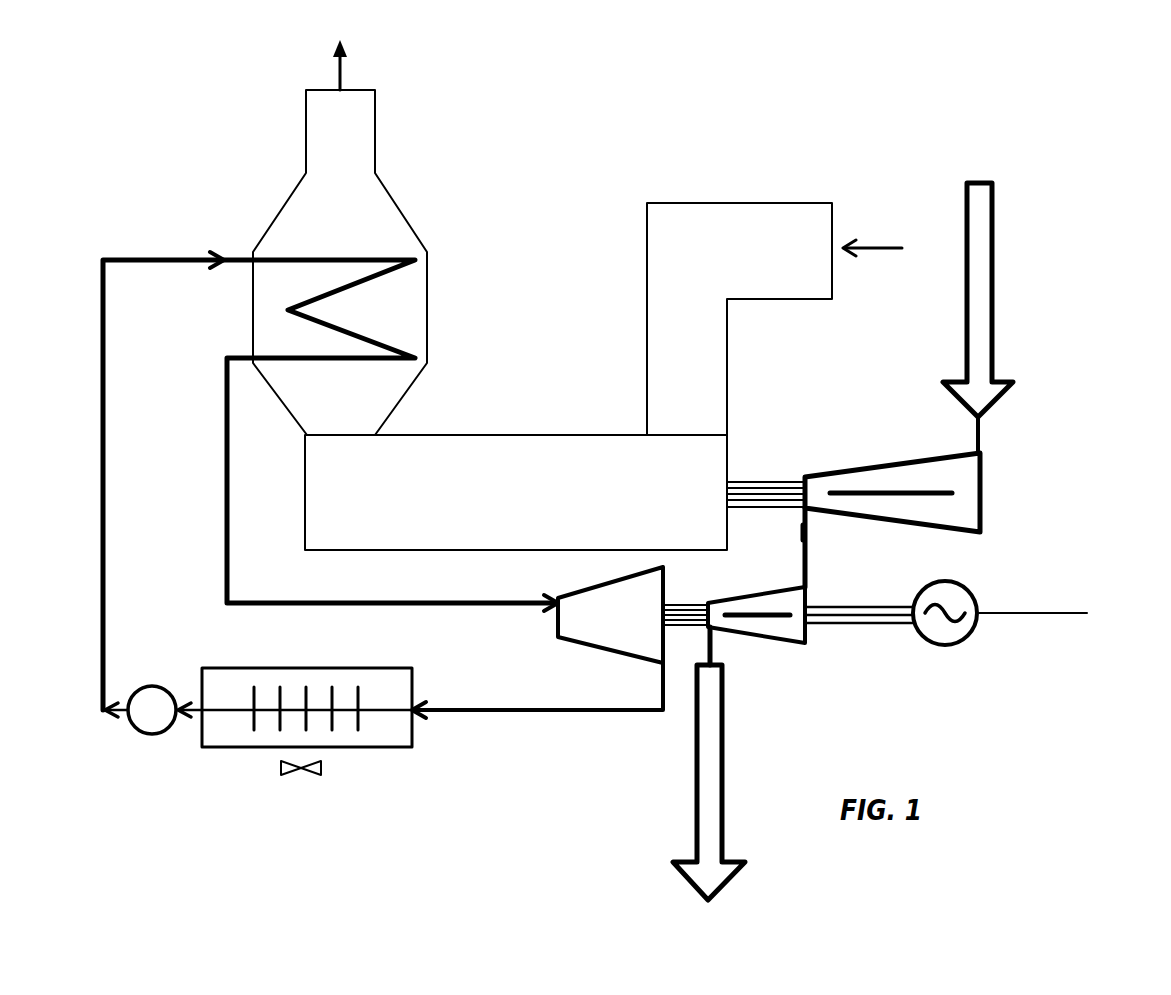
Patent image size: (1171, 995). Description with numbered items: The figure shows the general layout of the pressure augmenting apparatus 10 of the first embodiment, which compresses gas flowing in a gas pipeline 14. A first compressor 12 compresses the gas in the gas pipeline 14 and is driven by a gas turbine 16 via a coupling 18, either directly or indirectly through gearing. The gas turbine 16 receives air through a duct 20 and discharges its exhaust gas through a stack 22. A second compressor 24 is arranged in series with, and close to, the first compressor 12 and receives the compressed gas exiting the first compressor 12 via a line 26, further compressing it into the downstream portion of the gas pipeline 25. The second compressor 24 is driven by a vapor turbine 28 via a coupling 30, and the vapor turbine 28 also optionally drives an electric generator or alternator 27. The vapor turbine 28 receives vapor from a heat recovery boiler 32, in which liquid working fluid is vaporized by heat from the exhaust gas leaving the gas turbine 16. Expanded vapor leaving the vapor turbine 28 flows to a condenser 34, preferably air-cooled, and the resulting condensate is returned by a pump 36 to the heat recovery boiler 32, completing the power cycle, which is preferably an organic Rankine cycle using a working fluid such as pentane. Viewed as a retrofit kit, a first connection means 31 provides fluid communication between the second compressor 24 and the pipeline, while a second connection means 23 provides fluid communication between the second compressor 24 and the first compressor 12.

The pressure augmenting apparatus 10 is at (1098, 164).
The first compressor 12 is at (985, 490).
The gas pipeline 14 is at (992, 330).
The gas turbine 16 is at (563, 435).
The coupling 18 is at (747, 482).
The duct 20 is at (730, 203).
The stack 22 is at (375, 102).
The second connection means 23 is at (803, 532).
The second compressor 24 is at (805, 600).
The gas pipeline downstream portion 25 is at (722, 755).
The line 26 is at (810, 520).
The electric generator or alternator 27 is at (970, 635).
The vapor turbine 28 is at (677, 561).
The coupling 30 is at (686, 626).
The first connection means 31 is at (713, 637).
The heat recovery boiler 32 is at (268, 265).
The condenser 34 is at (292, 668).
The pump 36 is at (145, 687).